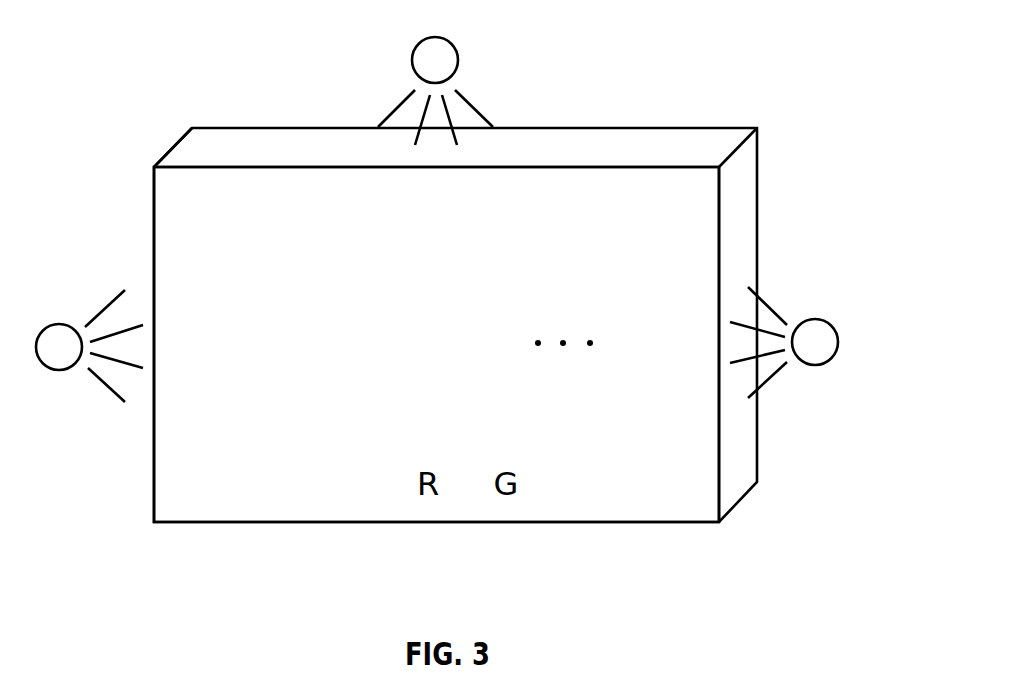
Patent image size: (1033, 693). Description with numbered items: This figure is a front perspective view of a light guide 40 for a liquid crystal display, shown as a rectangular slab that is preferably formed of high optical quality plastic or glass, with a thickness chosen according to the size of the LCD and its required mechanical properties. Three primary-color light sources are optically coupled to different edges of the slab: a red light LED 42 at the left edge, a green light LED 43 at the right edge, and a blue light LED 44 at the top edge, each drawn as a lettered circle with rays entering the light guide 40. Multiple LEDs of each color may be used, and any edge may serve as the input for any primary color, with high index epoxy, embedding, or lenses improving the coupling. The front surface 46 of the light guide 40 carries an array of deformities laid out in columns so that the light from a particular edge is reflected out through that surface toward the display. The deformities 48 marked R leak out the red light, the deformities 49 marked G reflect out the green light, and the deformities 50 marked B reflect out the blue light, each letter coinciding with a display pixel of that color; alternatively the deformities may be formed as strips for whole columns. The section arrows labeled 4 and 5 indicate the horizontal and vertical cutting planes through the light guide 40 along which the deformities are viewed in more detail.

The light guide 40 is at (687, 70).
The red light LED 42 is at (60, 370).
The green light LED 43 is at (817, 318).
The blue light LED 44 is at (453, 42).
The front surface 46 is at (692, 502).
The deformities for reflecting red light 48 is at (198, 498).
The deformities for reflecting green light 49 is at (278, 498).
The deformities for reflecting blue light 50 is at (353, 498).
The section line 4- 4 is at (138, 209).
The section line 5- 5 is at (350, 116).